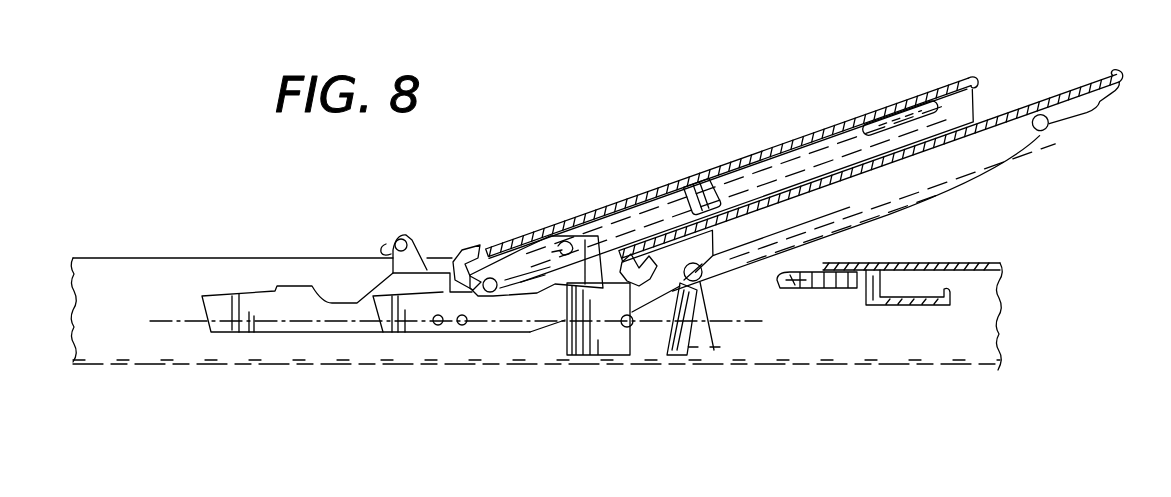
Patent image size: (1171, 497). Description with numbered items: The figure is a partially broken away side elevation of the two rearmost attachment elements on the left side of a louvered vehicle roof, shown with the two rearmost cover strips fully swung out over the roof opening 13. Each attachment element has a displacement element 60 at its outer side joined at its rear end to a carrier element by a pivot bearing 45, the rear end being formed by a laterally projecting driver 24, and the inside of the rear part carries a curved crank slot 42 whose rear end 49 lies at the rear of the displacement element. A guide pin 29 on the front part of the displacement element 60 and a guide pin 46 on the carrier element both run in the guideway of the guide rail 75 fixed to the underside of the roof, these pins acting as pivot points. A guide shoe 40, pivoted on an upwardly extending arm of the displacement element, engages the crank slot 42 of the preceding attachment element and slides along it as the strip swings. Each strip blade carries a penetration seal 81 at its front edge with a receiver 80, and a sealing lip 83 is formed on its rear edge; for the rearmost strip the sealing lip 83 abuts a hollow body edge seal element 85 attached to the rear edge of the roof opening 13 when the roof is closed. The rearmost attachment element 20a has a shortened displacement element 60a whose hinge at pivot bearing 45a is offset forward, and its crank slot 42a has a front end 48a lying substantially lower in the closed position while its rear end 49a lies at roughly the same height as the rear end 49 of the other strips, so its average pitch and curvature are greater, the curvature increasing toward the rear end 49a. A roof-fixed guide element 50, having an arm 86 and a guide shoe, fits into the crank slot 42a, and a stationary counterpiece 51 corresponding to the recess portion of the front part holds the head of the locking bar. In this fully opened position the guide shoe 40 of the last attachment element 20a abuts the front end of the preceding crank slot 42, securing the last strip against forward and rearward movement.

The roof opening 13 is at (112, 283).
The guide rail 75 is at (176, 390).
The displacement element 60 is at (264, 340).
The guide pin 29 is at (438, 327).
The guide pin 46 is at (463, 327).
The displacement element 60a is at (529, 339).
The stationary counterpiece 51 is at (610, 340).
The guide element 50 is at (686, 360).
The arm 86 is at (713, 276).
The front end of crank slot 48a is at (722, 272).
The hollow body edge seal element 85 is at (817, 292).
The guide shoe 40 is at (386, 250).
The penetration seal 81 is at (453, 260).
The receiver 80 is at (462, 250).
The driver 24 is at (707, 187).
The crank slot 42 is at (822, 162).
The slot 49 is at (903, 117).
The pivot bearing 45 is at (923, 90).
The sealing lip 83 is at (970, 88).
The pivot bearing 45a is at (1033, 100).
The rear end of crank slot 49a is at (1057, 137).
The crank slot 42a is at (897, 210).
The attachment element 20a is at (992, 180).